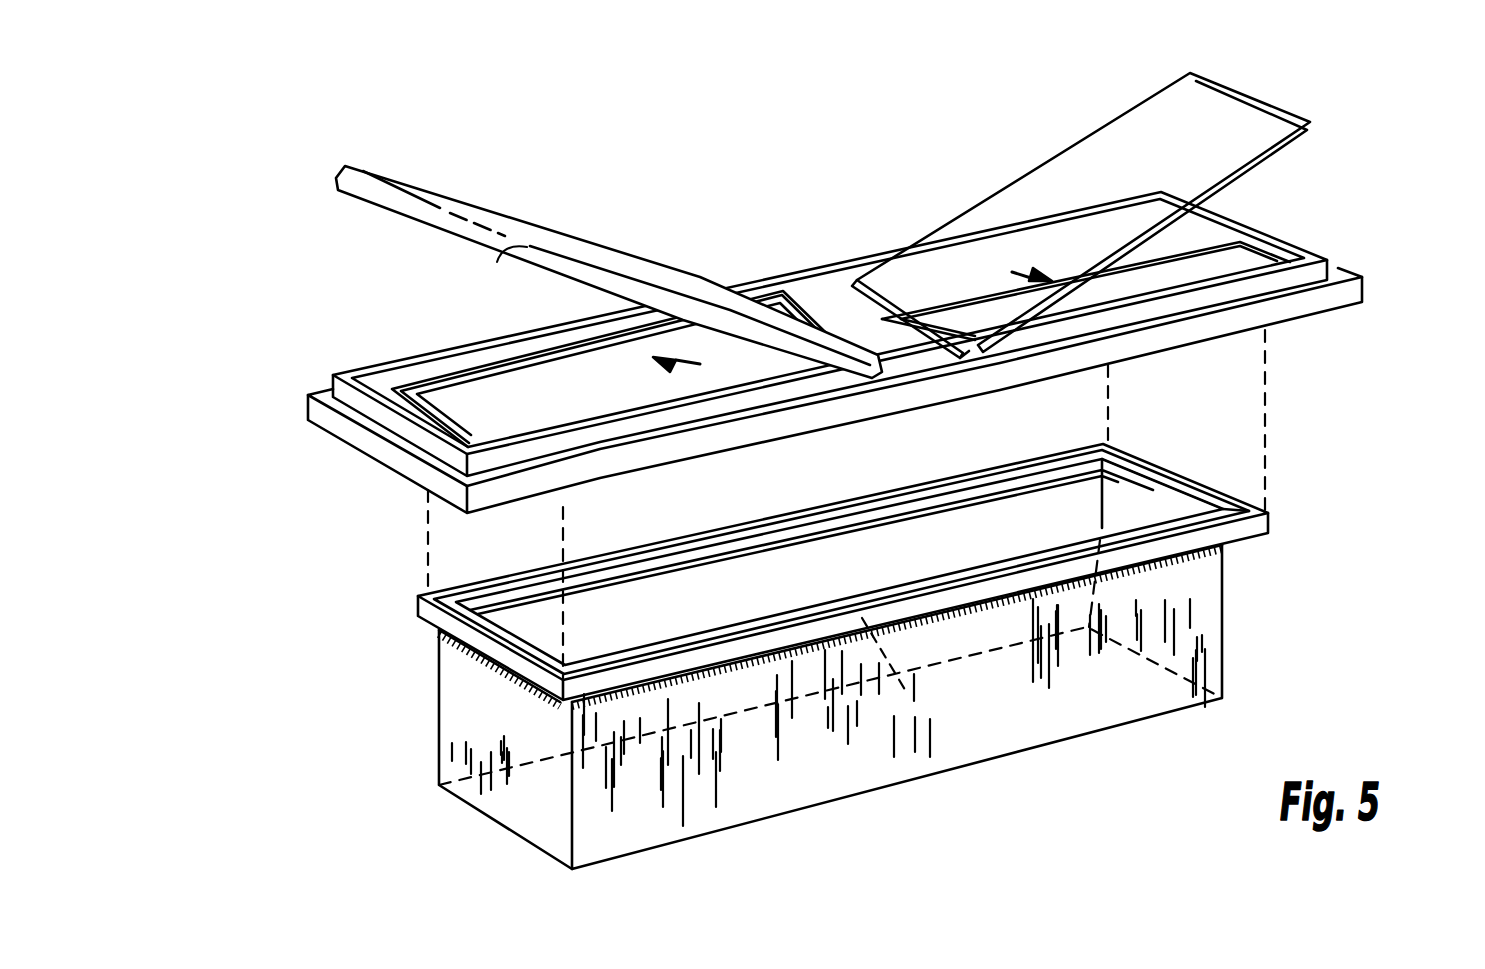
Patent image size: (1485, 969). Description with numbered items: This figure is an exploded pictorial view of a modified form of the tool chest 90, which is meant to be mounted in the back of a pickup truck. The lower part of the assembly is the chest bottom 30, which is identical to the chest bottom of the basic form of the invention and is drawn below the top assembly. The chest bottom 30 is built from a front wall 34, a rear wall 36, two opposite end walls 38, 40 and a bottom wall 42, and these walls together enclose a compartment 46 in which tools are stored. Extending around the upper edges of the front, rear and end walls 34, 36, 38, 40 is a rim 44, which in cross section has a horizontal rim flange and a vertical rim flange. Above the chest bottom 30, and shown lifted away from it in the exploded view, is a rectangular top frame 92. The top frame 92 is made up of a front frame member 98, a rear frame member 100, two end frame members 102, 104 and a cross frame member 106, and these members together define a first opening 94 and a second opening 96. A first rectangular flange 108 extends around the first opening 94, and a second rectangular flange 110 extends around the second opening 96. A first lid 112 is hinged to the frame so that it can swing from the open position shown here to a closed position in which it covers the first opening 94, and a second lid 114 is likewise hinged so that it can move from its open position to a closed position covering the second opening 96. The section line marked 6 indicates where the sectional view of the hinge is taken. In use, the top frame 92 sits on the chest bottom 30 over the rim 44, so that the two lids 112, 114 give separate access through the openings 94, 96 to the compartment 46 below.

The chest bottom 30 is at (814, 642).
The front wall 34 is at (990, 725).
The rear wall 36 is at (917, 550).
The end wall 38 is at (1188, 498).
The end wall 40 is at (520, 795).
The bottom wall 42 is at (848, 607).
The rim 44 is at (420, 598).
The compartment 46 is at (1140, 520).
The section line 6 is at (856, 333).
The tool chest 90 is at (812, 280).
The top frame 92 is at (812, 365).
The first opening 94 is at (803, 321).
The second opening 96 is at (1106, 243).
The front frame member 98 is at (1207, 330).
The rear frame member 100 is at (513, 338).
The end frame member 102 is at (375, 437).
The end frame member 104 is at (852, 365).
The cross frame member 106 is at (922, 362).
The first rectangular flange 108 is at (607, 420).
The second rectangular flange 110 is at (1128, 300).
The first lid 112 is at (437, 200).
The second lid 114 is at (1157, 140).